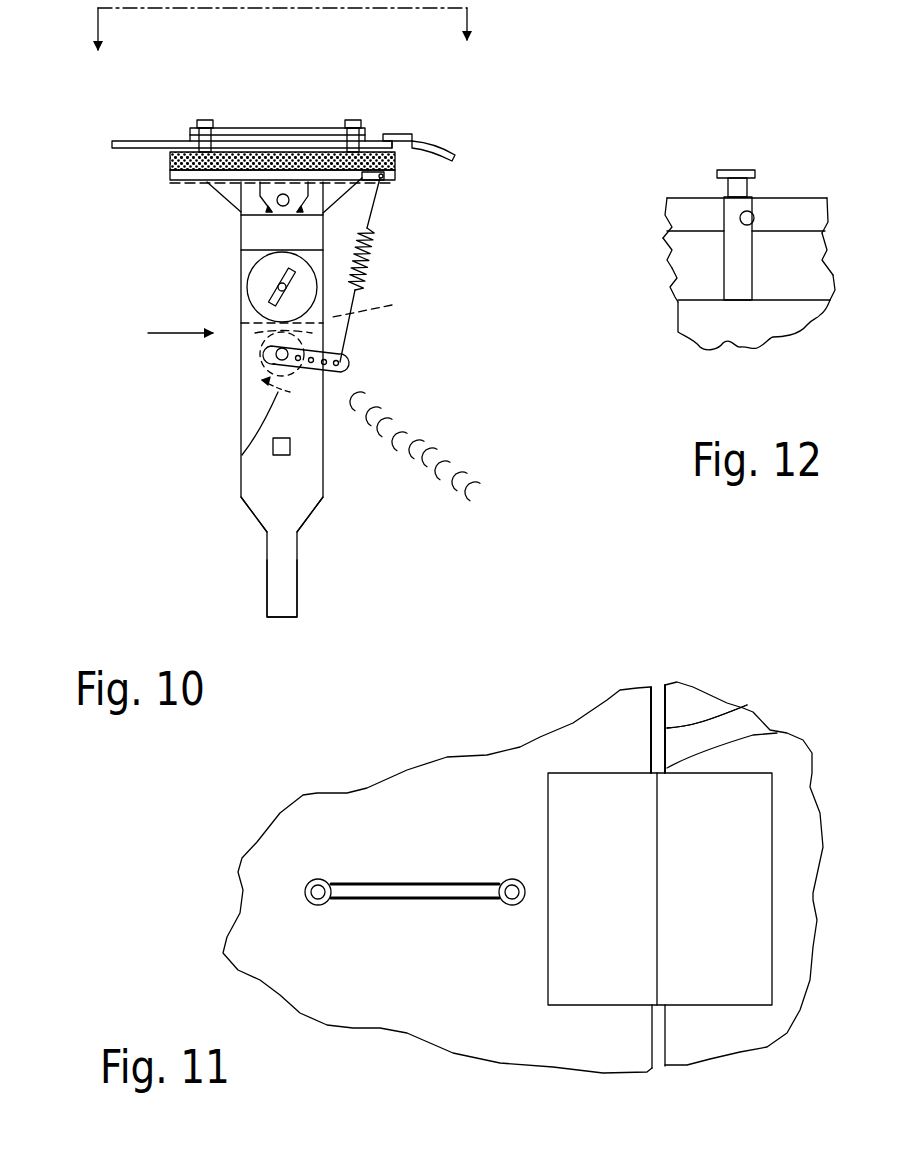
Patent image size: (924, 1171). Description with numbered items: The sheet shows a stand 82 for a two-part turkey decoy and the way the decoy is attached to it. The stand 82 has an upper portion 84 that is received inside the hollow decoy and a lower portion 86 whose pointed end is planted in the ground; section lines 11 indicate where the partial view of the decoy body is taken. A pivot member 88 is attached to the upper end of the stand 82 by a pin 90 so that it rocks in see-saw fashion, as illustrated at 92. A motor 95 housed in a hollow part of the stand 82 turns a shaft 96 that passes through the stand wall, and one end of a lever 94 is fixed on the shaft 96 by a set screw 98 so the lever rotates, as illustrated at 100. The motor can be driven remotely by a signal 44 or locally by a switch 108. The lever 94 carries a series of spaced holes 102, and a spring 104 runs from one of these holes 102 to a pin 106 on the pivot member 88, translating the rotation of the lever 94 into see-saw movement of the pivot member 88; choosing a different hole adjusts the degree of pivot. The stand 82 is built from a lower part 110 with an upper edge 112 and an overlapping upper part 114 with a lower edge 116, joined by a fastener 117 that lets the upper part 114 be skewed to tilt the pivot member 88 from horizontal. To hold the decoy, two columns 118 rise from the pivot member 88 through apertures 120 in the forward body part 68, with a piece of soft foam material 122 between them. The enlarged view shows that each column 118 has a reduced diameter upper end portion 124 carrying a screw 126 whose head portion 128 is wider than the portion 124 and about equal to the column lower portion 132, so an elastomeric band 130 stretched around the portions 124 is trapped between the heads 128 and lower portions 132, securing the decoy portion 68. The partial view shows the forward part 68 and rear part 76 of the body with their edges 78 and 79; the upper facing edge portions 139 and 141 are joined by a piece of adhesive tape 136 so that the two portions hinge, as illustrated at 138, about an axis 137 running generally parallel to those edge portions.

In FIG. 10, the section lines 11 is at (281, 45).
In FIG. 10, the signal 44 is at (420, 442).
In FIG. 10, the forward part of the body 68 is at (120, 147).
In FIG. 12, the forward part of the body 68 is at (682, 212).
In FIG. 11, the forward part of the body 68 is at (607, 722).
In FIG. 10, the rear part of the body 76 is at (450, 160).
In FIG. 11, the rear part of the body 76 is at (697, 702).
In FIG. 10, the rear edge 78 is at (393, 143).
In FIG. 11, the rear edge 78 is at (647, 708).
In FIG. 11, the edge 79 is at (747, 705).
In FIG. 10, the stand 82 is at (157, 335).
In FIG. 10, the upper portion 84 is at (241, 432).
In FIG. 10, the lower portion 86 is at (267, 587).
In FIG. 10, the pivot member 88 is at (210, 182).
In FIG. 12, the pivot member 88 is at (790, 322).
In FIG. 10, the pin 90 is at (257, 223).
In FIG. 10, the see-saw movement 92 is at (257, 187).
In FIG. 10, the lever 94 is at (347, 360).
In FIG. 10, the motor 95 is at (381, 304).
In FIG. 10, the shaft 96 is at (245, 347).
In FIG. 10, the set screw 98 is at (285, 362).
In FIG. 10, the rotation 100 is at (242, 453).
In FIG. 10, the spaced holes 102 is at (347, 355).
In FIG. 10, the spring 104 is at (373, 267).
In FIG. 10, the pin 106 is at (387, 180).
In FIG. 10, the switch 108 is at (290, 447).
In FIG. 10, the lower part 110 is at (255, 488).
In FIG. 10, the upper edge 112 is at (290, 252).
In FIG. 10, the upper part 114 is at (253, 247).
In FIG. 10, the lower edge 116 is at (243, 328).
In FIG. 10, the fastener 117 is at (257, 253).
In FIG. 10, the columns 118 is at (190, 139).
In FIG. 12, the columns 118 is at (740, 260).
In FIG. 10, the apertures 120 is at (213, 137).
In FIG. 12, the apertures 120 is at (753, 222).
In FIG. 11, the apertures 120 is at (312, 902).
In FIG. 10, the soft foam material 122 is at (170, 160).
In FIG. 12, the soft foam material 122 is at (682, 275).
In FIG. 12, the reduced diameter upper end portion 124 is at (756, 212).
In FIG. 10, the screw 126 is at (208, 118).
In FIG. 12, the screw 126 is at (727, 172).
In FIG. 12, the head portion 128 is at (748, 177).
In FIG. 11, the head portion 128 is at (317, 890).
In FIG. 10, the elastomeric band 130 is at (273, 128).
In FIG. 12, the lower portion of the column 132 is at (722, 215).
In FIG. 11, the adhesive tape 136 is at (730, 843).
In FIG. 11, the axis 137 is at (657, 962).
In FIG. 11, the hinged movement 138 is at (777, 733).
In FIG. 11, the upper facing edge portion 139 is at (648, 1038).
In FIG. 11, the upper facing edge portion 141 is at (667, 1053).